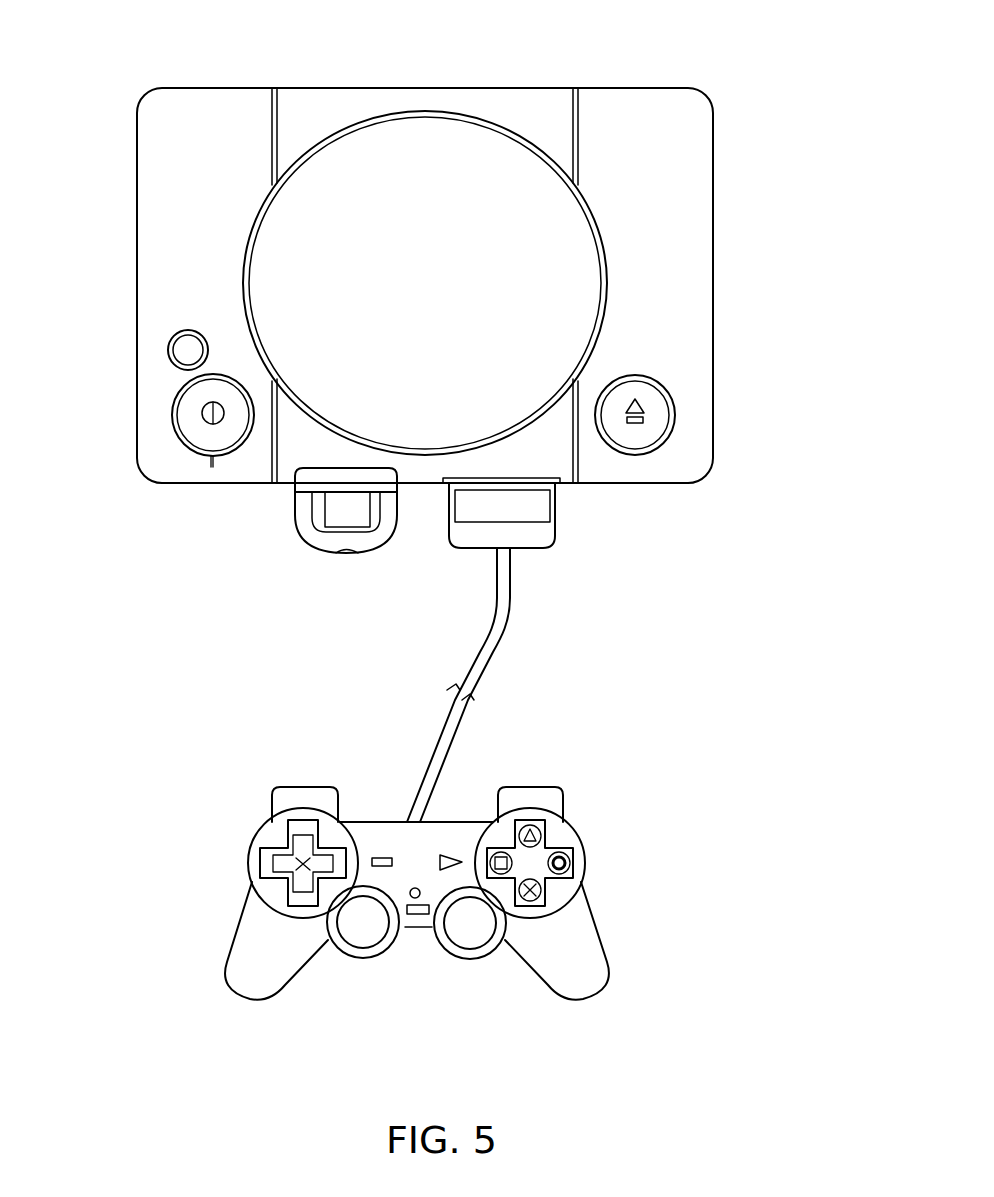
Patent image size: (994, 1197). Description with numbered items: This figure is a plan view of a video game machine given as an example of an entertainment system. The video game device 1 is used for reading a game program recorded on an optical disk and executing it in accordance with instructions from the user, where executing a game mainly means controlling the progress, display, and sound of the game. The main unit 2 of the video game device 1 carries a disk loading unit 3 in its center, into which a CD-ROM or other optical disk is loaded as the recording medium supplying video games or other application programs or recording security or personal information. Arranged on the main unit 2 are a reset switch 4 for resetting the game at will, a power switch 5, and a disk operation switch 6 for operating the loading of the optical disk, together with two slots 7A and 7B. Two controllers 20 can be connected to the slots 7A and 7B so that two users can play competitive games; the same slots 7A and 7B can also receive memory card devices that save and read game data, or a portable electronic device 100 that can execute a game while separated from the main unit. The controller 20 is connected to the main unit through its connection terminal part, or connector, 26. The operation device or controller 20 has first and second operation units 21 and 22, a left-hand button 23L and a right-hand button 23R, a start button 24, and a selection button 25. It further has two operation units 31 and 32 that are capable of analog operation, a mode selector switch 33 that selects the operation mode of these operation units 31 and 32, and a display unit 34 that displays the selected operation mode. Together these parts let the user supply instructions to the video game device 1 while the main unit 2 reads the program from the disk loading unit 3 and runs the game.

The video game device 1 is at (425, 301).
The main unit 2 is at (653, 485).
The disk loading unit 3 is at (457, 145).
The reset switch 4 is at (178, 338).
The power switch 5 is at (185, 408).
The disk operation switch 6 is at (662, 408).
The slot 7A is at (297, 500).
The slot 7B is at (558, 483).
The portable electronic device 100 is at (302, 544).
The connection terminal part (connector) 26 is at (545, 550).
The operation device or controller 20 is at (456, 872).
The first operation unit 21 is at (262, 832).
The second operation unit 22 is at (565, 836).
The left-hand button 23L is at (297, 782).
The right-hand button 23R is at (577, 795).
The start button 24 is at (456, 858).
The selection button 25 is at (381, 856).
The operation unit 31 is at (360, 924).
The operation unit 32 is at (468, 924).
The mode selector switch 33 is at (412, 898).
The display unit 34 is at (418, 928).